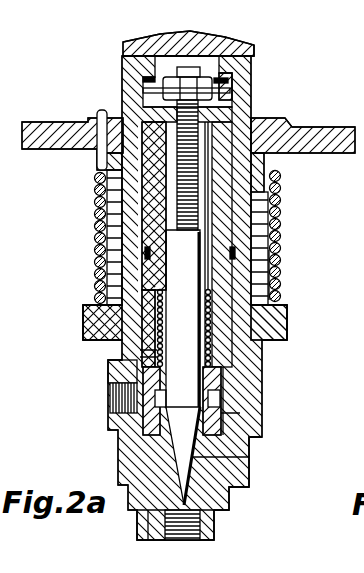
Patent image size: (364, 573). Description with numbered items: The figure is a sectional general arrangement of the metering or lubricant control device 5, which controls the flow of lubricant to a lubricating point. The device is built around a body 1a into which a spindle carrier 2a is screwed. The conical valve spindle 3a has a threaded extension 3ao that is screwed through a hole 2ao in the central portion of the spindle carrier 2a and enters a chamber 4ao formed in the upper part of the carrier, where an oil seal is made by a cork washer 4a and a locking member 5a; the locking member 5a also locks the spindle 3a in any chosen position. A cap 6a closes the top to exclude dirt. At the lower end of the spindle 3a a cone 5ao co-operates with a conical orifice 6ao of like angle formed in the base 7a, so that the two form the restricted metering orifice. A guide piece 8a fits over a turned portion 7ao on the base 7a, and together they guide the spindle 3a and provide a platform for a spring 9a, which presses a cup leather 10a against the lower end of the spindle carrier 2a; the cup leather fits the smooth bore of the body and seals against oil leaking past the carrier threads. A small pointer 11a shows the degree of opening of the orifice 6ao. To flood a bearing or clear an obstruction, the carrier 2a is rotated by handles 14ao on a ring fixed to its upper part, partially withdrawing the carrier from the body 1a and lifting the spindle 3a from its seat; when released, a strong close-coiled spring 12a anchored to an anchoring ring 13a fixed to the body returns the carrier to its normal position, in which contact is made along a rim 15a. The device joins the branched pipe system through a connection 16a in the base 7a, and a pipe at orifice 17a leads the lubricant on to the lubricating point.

The metering or lubricant control device 5 is at (208, 57).
The cap 6a is at (255, 48).
The chamber 4ao is at (140, 77).
The pointer 11a is at (225, 95).
The handles 14ao is at (50, 126).
The cork washer 4a is at (266, 157).
The locking member 5a is at (172, 127).
The rim 15a is at (95, 181).
The spindle carrier 2a is at (130, 218).
The conical valve spindle 3a is at (147, 238).
The anchoring ring 13a is at (90, 322).
The hole 2ao is at (282, 183).
The threaded extension 3ao is at (280, 224).
The close-coiled spring 12a is at (280, 256).
The cup leather 10a is at (236, 307).
The spring 9a is at (249, 345).
The body 1a is at (113, 366).
The orifice 17a is at (110, 398).
The turned portion 7ao is at (160, 432).
The guide piece 8a is at (190, 408).
The cone 5ao is at (249, 457).
The base 7a is at (228, 504).
The conical orifice 6ao is at (145, 508).
The connection 16a is at (196, 541).